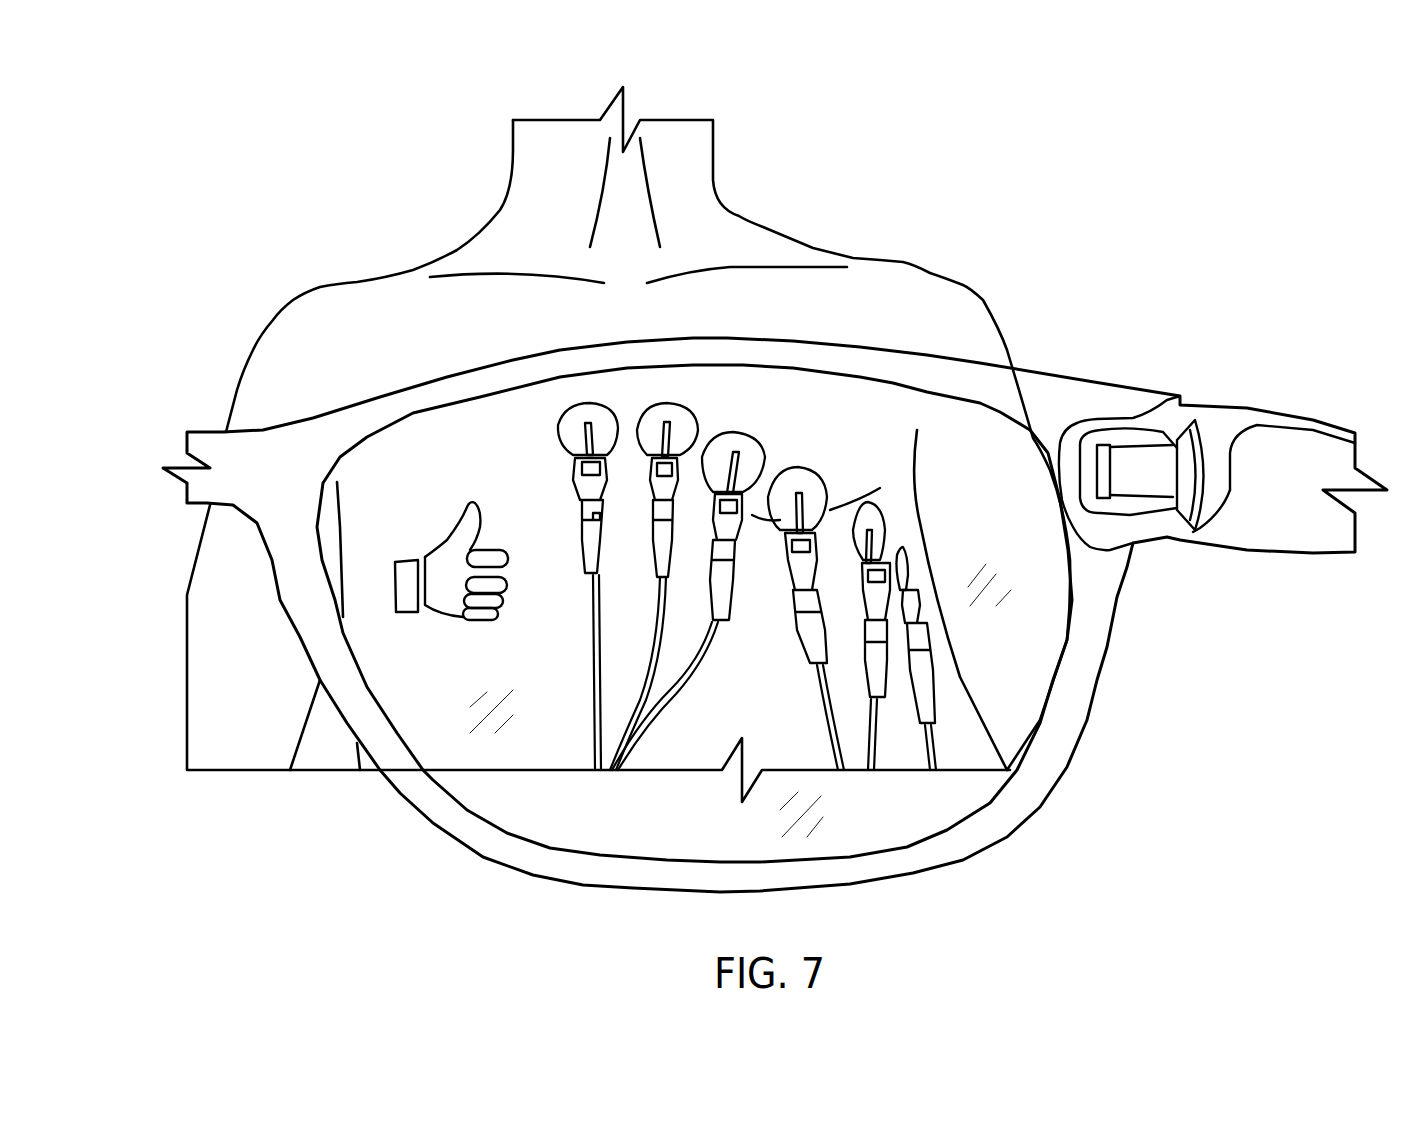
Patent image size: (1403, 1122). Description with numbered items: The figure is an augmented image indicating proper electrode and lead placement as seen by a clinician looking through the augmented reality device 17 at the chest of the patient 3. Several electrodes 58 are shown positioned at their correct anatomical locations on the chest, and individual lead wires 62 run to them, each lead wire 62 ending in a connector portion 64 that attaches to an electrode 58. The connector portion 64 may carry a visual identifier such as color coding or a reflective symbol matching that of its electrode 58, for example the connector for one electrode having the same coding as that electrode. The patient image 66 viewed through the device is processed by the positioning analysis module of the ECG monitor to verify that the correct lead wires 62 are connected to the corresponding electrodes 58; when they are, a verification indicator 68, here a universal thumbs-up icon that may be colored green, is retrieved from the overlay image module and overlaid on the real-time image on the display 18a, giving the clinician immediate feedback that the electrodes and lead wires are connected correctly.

The patient 3 is at (757, 223).
The augmented reality device 17 is at (1120, 383).
The display 18a is at (796, 452).
The electrodes 58 is at (577, 413).
The lead wires 62 is at (595, 665).
The connector portion 64 is at (580, 530).
The patient image 66 is at (879, 430).
The verification indicator 68 is at (433, 527).